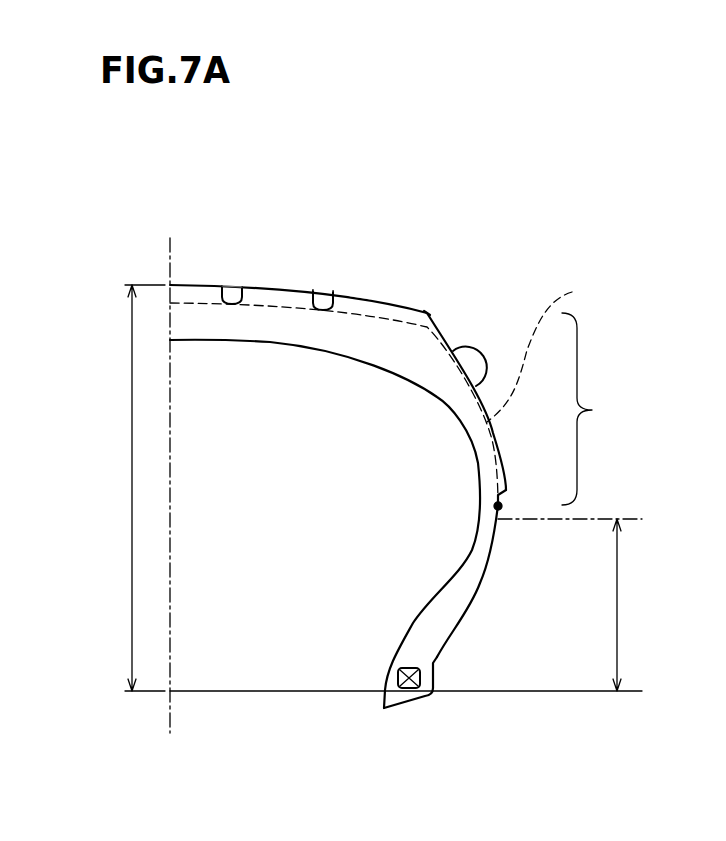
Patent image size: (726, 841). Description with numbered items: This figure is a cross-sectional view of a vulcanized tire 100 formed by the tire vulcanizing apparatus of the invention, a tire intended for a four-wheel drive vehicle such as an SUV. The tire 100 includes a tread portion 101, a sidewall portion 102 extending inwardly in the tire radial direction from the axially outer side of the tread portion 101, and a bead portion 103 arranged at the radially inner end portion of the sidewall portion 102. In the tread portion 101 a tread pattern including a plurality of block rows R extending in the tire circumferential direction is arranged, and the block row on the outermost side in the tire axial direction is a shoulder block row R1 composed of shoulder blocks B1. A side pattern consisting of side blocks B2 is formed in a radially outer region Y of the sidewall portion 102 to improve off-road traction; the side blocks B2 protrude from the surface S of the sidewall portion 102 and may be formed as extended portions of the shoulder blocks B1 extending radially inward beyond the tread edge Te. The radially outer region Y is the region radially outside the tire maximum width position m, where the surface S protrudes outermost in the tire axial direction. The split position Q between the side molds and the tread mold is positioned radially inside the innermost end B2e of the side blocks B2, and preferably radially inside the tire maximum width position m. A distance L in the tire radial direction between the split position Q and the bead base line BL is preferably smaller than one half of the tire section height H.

The tire 100 is at (449, 240).
The tread portion 101 is at (297, 271).
The sidewall portion 102 is at (515, 535).
The bead portion 103 is at (467, 644).
The block row R is at (196, 285).
The shoulder block row R1 is at (360, 297).
The shoulder block B1 is at (390, 302).
The side block B2 is at (482, 362).
The innermost end of side block B2e is at (522, 491).
The tread edge Te is at (427, 313).
The surface of sidewall portion S is at (540, 347).
The radially outer region Y is at (590, 409).
The tire maximum width position m is at (480, 514).
The split position Q is at (584, 520).
The tire section height H is at (135, 488).
The distance L is at (628, 605).
The bead base line BL is at (510, 691).